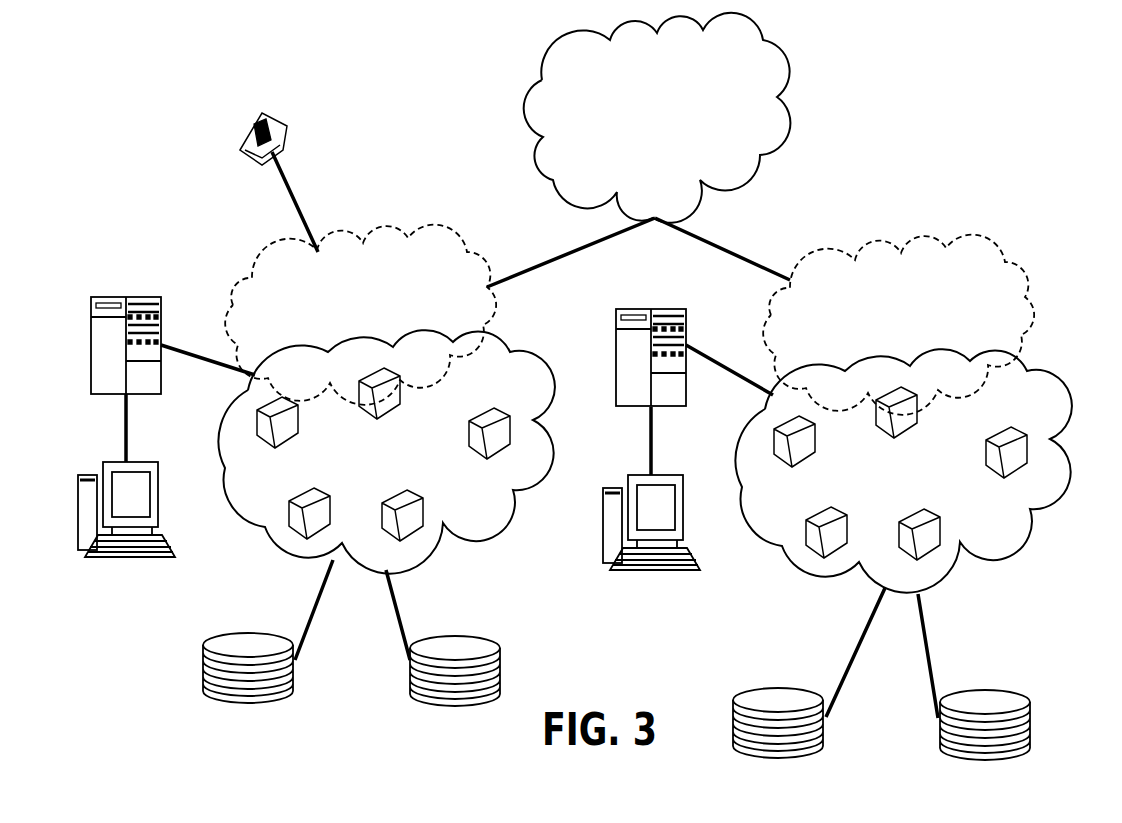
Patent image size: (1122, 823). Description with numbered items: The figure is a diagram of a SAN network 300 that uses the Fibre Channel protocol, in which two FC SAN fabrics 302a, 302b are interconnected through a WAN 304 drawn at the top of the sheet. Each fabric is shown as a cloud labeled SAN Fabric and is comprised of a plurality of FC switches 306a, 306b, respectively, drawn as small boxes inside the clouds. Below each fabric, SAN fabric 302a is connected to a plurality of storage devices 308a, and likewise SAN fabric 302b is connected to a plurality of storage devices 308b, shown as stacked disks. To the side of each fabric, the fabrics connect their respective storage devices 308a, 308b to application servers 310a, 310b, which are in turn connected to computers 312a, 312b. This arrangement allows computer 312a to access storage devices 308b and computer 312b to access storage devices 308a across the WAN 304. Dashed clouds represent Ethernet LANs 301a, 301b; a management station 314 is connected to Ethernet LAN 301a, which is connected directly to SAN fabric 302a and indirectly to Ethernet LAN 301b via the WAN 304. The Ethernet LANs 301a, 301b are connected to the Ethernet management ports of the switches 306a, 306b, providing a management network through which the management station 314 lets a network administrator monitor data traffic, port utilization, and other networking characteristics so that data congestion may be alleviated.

The SAN network 300 is at (927, 112).
The WAN 304 is at (790, 78).
The Ethernet LAN 301a is at (487, 258).
The Ethernet LAN 301b is at (1008, 258).
The FC SAN fabric 302a is at (513, 348).
The FC SAN fabric 302b is at (1028, 365).
The FC switch 306a is at (294, 407).
The FC switch 306b is at (811, 426).
The storage device 308a is at (258, 624).
The storage device 308b is at (785, 680).
The application server 310a is at (150, 297).
The application server 310b is at (675, 309).
The computer 312a is at (150, 462).
The computer 312b is at (676, 475).
The management station 314 is at (275, 110).